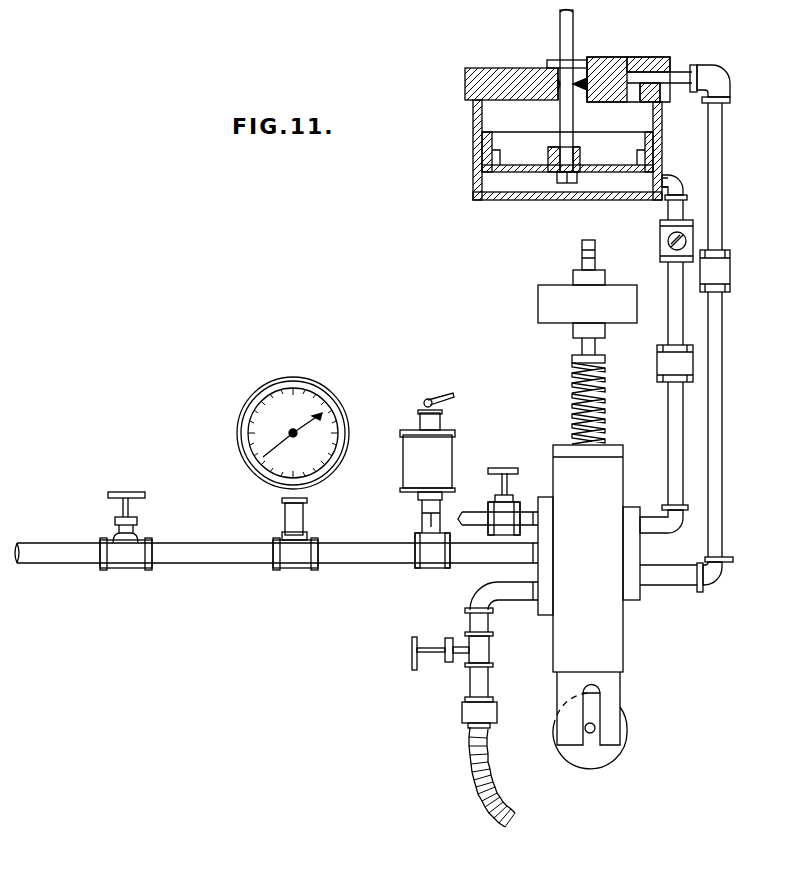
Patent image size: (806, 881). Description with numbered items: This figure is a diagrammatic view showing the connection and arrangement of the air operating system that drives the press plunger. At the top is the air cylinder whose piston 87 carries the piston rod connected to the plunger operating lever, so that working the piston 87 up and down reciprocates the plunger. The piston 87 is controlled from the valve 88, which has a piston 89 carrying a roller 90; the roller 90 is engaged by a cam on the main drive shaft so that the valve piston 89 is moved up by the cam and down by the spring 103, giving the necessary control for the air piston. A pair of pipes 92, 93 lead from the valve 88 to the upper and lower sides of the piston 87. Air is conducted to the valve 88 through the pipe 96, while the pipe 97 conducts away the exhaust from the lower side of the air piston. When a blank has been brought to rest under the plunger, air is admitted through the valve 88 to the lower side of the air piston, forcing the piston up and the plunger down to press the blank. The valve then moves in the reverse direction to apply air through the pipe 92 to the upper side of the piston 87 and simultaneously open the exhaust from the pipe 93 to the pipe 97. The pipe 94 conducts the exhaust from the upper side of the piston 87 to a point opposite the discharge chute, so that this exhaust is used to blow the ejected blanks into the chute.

The piston 87 is at (472, 153).
The valve 88 is at (604, 638).
The piston 89 is at (606, 685).
The roller 90 is at (617, 738).
The pipe 92 is at (722, 235).
The pipe 93 is at (678, 325).
The pipe 94 is at (472, 686).
The pipe 96 is at (228, 553).
The pipe 97 is at (470, 512).
The spring 103 is at (572, 410).